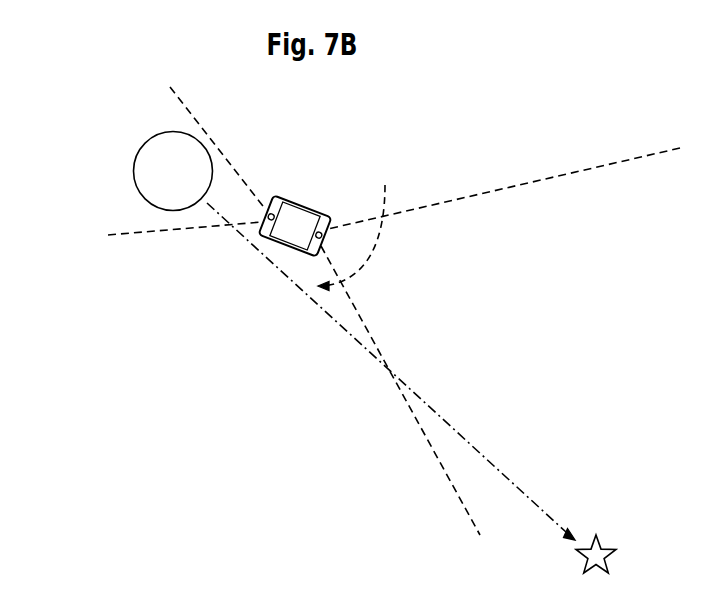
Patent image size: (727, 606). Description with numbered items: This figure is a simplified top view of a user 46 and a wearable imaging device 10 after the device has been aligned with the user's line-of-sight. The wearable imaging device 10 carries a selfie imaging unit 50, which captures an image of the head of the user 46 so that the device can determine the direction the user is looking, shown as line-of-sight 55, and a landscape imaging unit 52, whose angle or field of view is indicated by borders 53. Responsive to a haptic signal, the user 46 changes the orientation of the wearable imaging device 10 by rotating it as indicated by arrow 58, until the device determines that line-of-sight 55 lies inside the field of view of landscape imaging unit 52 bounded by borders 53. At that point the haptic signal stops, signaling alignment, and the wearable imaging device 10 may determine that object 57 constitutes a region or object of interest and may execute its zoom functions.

The wearable imaging device 10 is at (300, 194).
The user 46 is at (137, 140).
The selfie imaging unit 50 is at (268, 197).
The landscape imaging unit 52 is at (331, 226).
The borders 53 is at (522, 174).
The line-of-sight 55 is at (310, 309).
The object 57 is at (620, 538).
The arrow 58 is at (382, 252).